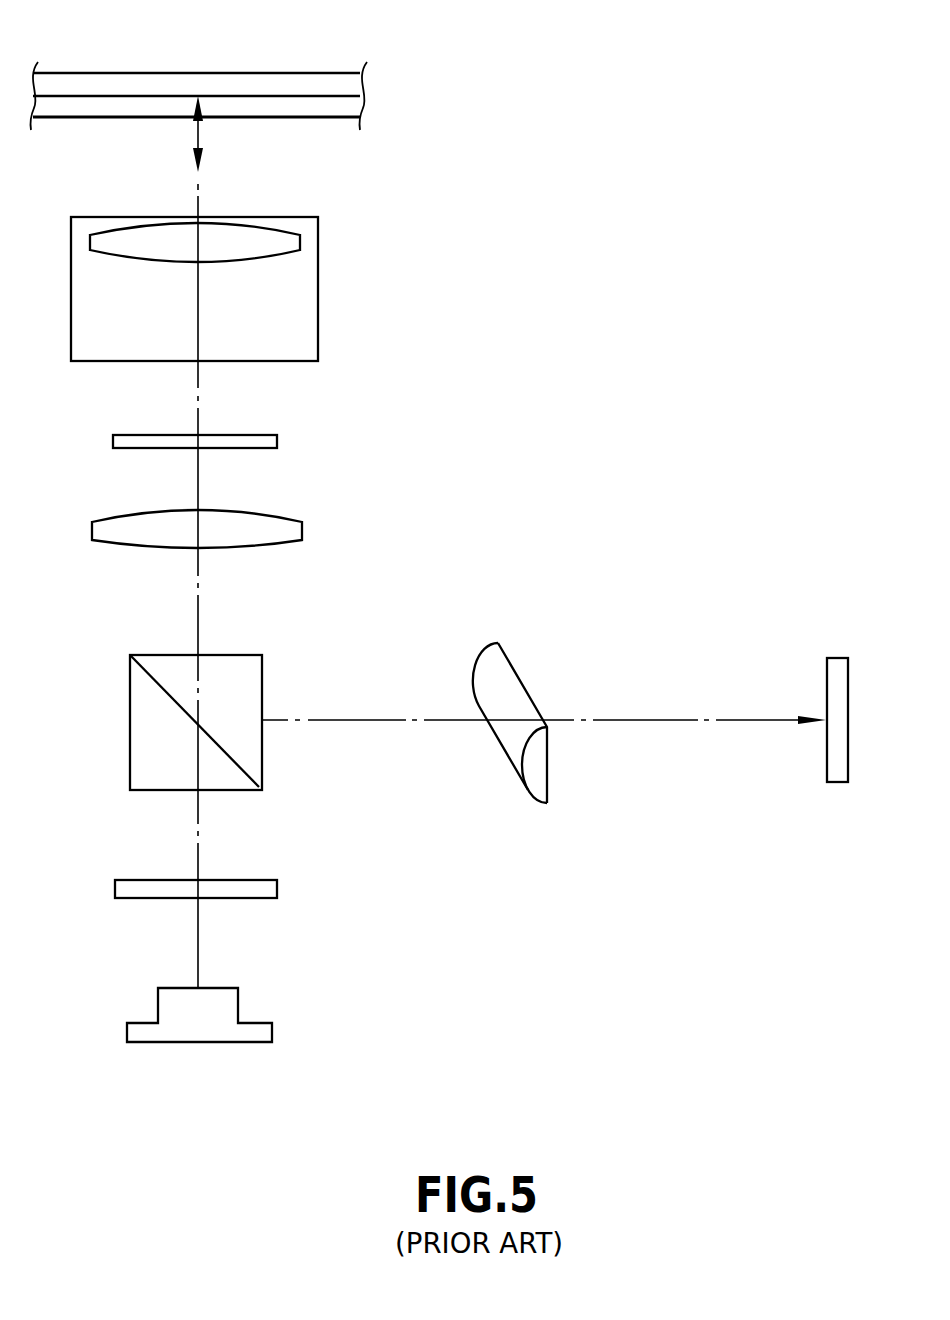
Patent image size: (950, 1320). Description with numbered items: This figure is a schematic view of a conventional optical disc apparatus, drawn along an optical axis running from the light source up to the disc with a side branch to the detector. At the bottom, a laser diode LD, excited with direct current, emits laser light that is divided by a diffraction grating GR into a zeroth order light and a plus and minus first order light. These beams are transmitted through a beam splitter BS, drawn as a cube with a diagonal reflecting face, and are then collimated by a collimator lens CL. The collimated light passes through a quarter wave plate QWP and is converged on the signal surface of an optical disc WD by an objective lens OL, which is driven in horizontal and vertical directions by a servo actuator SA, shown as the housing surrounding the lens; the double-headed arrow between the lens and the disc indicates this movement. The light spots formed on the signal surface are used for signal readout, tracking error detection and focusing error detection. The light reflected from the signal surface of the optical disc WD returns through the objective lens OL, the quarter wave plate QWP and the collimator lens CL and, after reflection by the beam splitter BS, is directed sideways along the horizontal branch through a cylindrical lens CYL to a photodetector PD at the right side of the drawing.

The optical disc WD is at (340, 80).
The objective lens OL is at (273, 246).
The servo actuator SA is at (300, 315).
The quarter wave plate QWP is at (278, 441).
The collimator lens CL is at (283, 538).
The beam splitter BS is at (255, 682).
The cylindrical lens CYL is at (529, 781).
The photodetector PD is at (838, 772).
The diffraction grating GR is at (273, 889).
The laser diode LD is at (260, 1033).